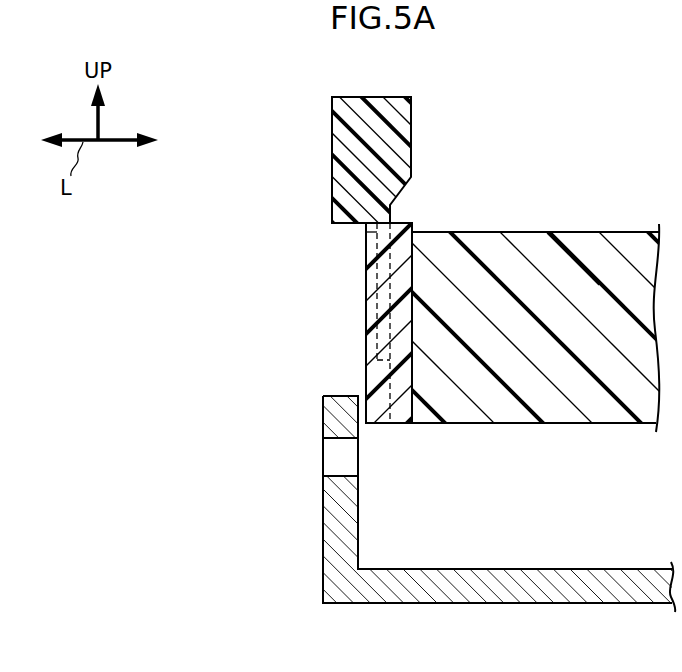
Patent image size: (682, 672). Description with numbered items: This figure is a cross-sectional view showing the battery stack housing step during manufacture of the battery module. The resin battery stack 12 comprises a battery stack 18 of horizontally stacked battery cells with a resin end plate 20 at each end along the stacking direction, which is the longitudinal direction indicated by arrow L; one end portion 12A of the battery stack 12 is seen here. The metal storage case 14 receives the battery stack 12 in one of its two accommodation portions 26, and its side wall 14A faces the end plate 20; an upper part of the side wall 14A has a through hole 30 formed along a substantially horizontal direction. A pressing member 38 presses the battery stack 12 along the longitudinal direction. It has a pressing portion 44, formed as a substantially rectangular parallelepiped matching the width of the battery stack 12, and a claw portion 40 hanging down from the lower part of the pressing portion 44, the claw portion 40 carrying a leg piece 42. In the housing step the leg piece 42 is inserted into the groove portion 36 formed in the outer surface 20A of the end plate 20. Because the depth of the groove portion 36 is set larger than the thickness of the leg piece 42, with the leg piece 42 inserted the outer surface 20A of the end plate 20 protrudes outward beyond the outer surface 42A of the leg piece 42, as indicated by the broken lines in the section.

The battery stack 12 is at (625, 229).
The end portion 12A is at (403, 250).
The storage case 14 is at (478, 607).
The side wall 14A is at (332, 518).
The battery stack 18 is at (568, 240).
The end plate 20 is at (395, 231).
The outer surface 20A is at (368, 288).
The accommodation portion 26 is at (522, 530).
The through hole 30 is at (347, 438).
The groove portion 36 is at (368, 280).
The pressing member 38 is at (378, 88).
The claw portion 40 is at (368, 229).
The leg piece 42 is at (368, 312).
The outer surface of the leg 42A is at (372, 243).
The pressing portion 44 is at (331, 120).